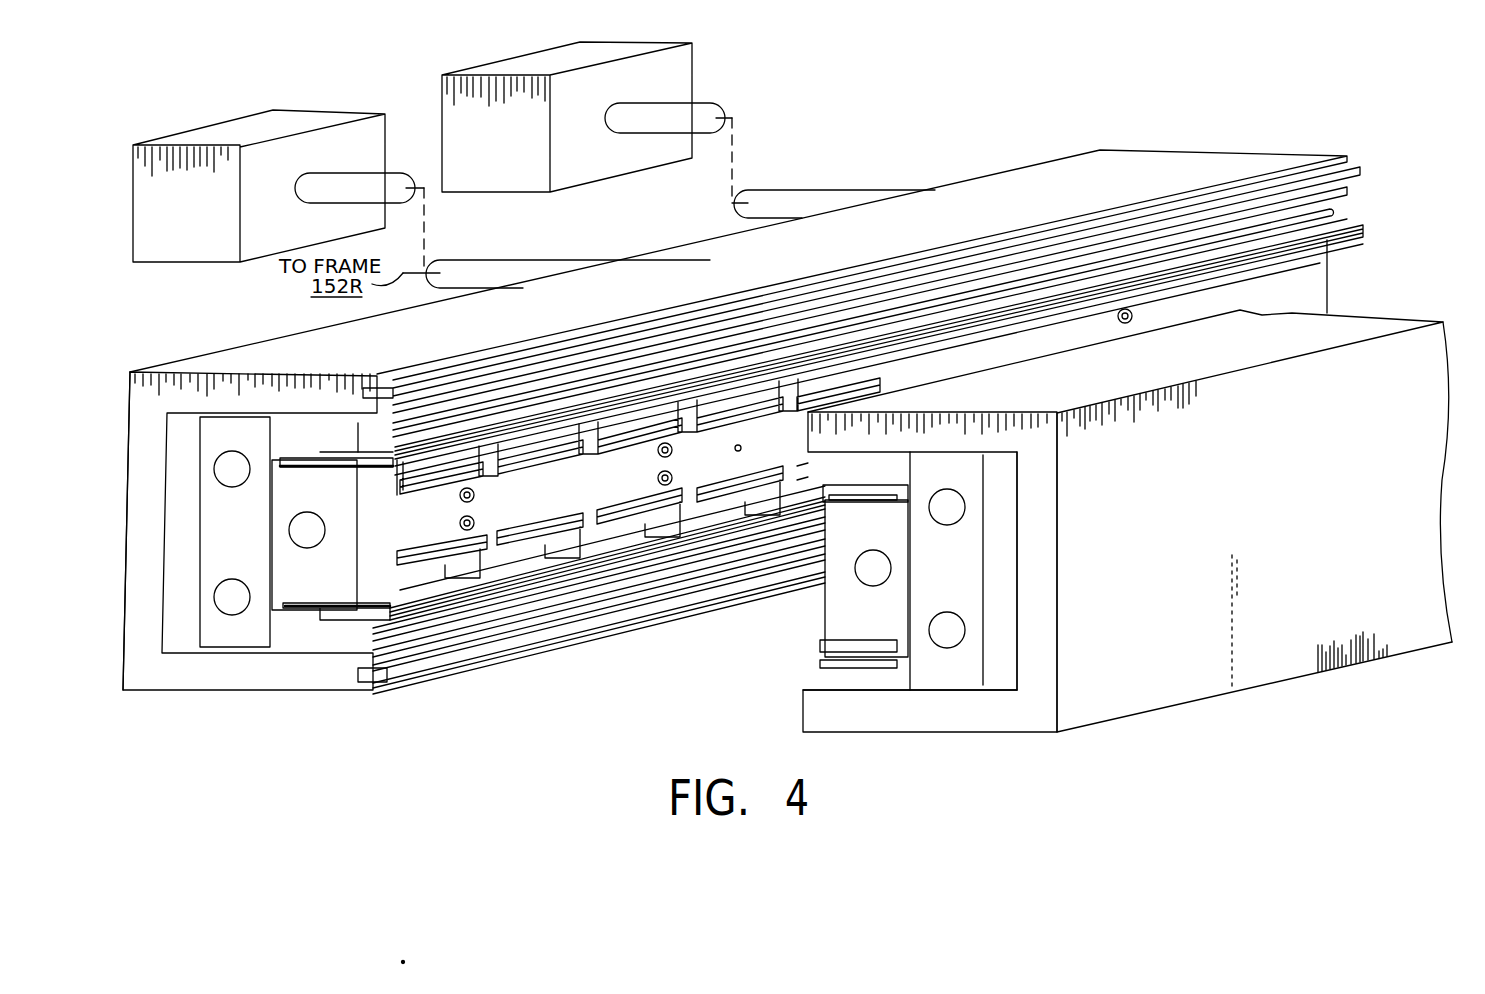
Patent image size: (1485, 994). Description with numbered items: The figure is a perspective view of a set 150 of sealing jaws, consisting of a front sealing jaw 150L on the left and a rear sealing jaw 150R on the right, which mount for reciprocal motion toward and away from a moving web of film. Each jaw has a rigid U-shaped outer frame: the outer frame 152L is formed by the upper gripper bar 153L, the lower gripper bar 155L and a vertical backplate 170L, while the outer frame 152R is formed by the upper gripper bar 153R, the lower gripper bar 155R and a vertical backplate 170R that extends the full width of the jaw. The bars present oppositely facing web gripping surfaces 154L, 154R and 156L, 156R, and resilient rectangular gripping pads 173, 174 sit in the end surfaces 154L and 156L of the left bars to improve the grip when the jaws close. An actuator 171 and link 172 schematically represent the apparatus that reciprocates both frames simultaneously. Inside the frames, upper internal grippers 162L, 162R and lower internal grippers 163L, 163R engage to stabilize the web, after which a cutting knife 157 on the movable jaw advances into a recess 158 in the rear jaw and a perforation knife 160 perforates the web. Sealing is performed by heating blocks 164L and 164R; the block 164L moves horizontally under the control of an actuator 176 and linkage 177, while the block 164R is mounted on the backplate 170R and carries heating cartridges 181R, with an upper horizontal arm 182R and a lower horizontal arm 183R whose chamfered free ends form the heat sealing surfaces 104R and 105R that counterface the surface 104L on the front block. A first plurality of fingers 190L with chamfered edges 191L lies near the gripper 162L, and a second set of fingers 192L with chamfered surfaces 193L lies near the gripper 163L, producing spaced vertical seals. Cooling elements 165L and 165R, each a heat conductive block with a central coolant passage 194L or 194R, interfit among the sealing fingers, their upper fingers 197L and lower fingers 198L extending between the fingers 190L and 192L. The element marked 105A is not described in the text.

The set of sealing jaws 150 is at (1052, 130).
The front sealing jaw 150L is at (1113, 150).
The rear sealing jaw 150R is at (1425, 405).
The outer frame of front jaw 152L is at (133, 690).
The outer frame of rear jaw 152R is at (1040, 738).
The upper gripper bar of front jaw 153L is at (1230, 150).
The upper gripper bar of rear jaw 153R is at (1025, 420).
The upper web gripping surface of front jaw 154L is at (1352, 163).
The upper web gripping surface of rear jaw 154R is at (805, 432).
The lower gripper bar of front jaw 155L is at (367, 693).
The lower gripper bar of rear jaw 155R is at (915, 725).
The lower web gripping surface of front jaw 156L is at (625, 632).
The lower web gripping surface of rear jaw 156R is at (825, 680).
The cutting knife 157 is at (365, 482).
The recess 158 is at (905, 460).
The perforation knife 160 is at (497, 613).
The upper internal gripper of front jaw 162L is at (400, 462).
The upper internal gripper of rear jaw 162R is at (822, 490).
The lower internal gripper of front jaw 163L is at (482, 567).
The lower internal gripper of rear jaw 163R is at (830, 656).
The heating block of front jaw 164L is at (192, 600).
The heating block of rear jaw 164R is at (985, 532).
The cooling element of front jaw 165L is at (283, 587).
The cooling element of rear jaw 165R is at (955, 628).
The backplate of front jaw 170L is at (147, 413).
The backplate of rear jaw 170R is at (1040, 458).
The actuator 171 is at (255, 122).
The link 172 is at (430, 203).
The upper resilient gripping pad 173 is at (1370, 180).
The lower resilient gripping pad 174 is at (650, 613).
The heating block actuator 176 is at (548, 52).
The heating block linkage 177 is at (740, 130).
The heating cartridges 181R is at (955, 507).
The upper horizontal arm 182R is at (1017, 430).
The lower horizontal arm 183R is at (880, 690).
The first plurality of fingers 190L is at (497, 348).
The chamfered edges 191L is at (615, 400).
The second set of fingers 192L is at (568, 640).
The chamfered surfaces 193L is at (630, 573).
The central coolant passage 194L is at (307, 560).
The central coolant passage of rear cooling element 194R is at (885, 565).
The upper cooling fingers 197L is at (590, 360).
The lower cooling fingers 198L is at (530, 540).
The upper heat sealing surface of front jaw 104L is at (1345, 220).
The upper heat sealing surface of rear jaw 104R is at (880, 490).
The print element 105A is at (648, 620).
The lower heat sealing surface of rear jaw 105R is at (812, 668).